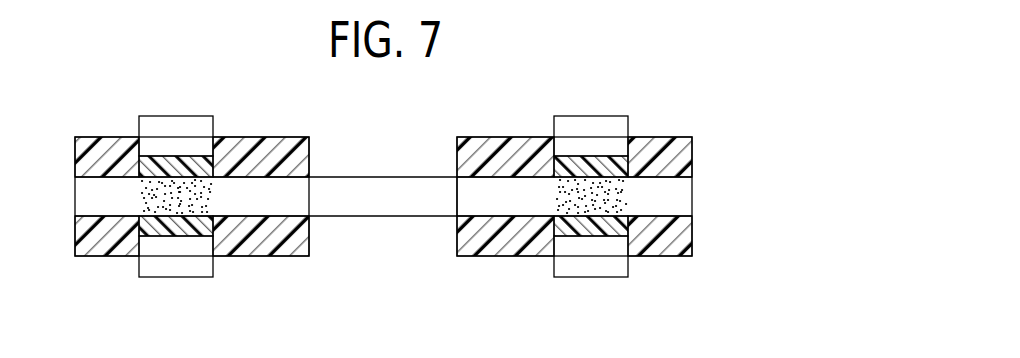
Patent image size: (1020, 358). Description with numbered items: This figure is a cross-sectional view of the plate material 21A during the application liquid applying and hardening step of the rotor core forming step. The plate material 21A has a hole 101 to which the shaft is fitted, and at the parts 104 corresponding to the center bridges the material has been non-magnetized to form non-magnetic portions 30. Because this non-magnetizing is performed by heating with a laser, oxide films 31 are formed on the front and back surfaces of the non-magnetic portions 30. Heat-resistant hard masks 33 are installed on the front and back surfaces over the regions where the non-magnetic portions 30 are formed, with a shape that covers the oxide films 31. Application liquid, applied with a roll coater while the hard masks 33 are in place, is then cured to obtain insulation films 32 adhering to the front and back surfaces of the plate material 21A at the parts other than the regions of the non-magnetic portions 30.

The plate material 21A is at (685, 198).
The non-magnetic portion 30 is at (142, 203).
The oxide film 31 is at (188, 167).
The insulation film 32 is at (253, 150).
The hard mask 33 is at (159, 125).
The part corresponding to the center bridge 104 is at (138, 195).
The hole 101 is at (455, 200).